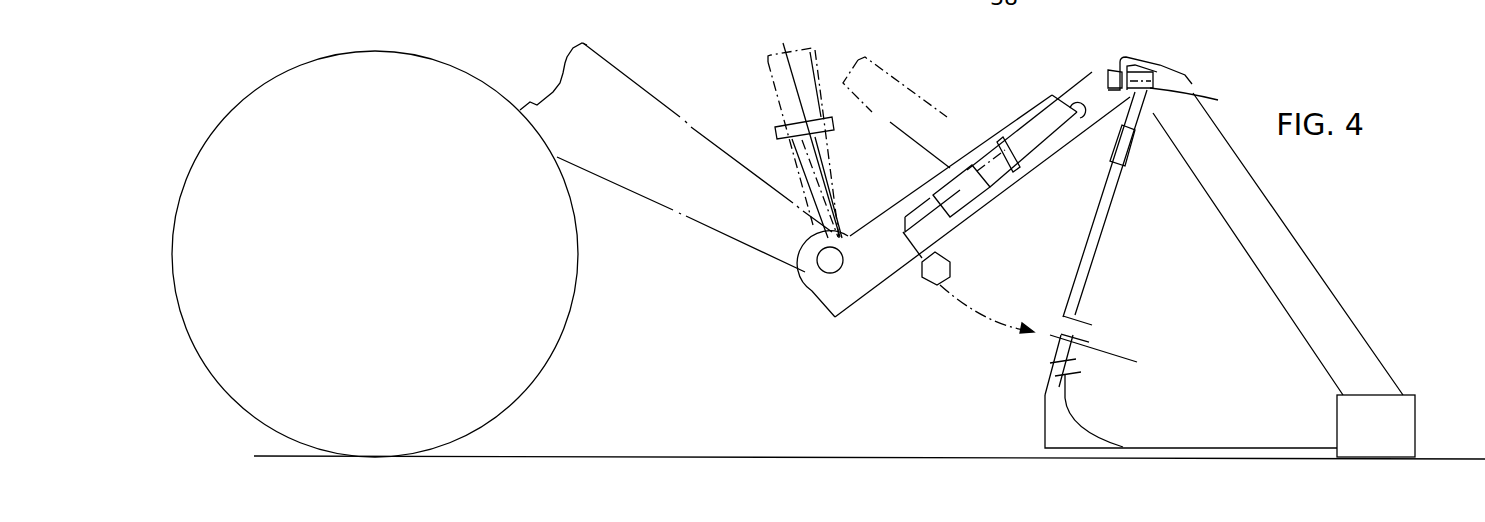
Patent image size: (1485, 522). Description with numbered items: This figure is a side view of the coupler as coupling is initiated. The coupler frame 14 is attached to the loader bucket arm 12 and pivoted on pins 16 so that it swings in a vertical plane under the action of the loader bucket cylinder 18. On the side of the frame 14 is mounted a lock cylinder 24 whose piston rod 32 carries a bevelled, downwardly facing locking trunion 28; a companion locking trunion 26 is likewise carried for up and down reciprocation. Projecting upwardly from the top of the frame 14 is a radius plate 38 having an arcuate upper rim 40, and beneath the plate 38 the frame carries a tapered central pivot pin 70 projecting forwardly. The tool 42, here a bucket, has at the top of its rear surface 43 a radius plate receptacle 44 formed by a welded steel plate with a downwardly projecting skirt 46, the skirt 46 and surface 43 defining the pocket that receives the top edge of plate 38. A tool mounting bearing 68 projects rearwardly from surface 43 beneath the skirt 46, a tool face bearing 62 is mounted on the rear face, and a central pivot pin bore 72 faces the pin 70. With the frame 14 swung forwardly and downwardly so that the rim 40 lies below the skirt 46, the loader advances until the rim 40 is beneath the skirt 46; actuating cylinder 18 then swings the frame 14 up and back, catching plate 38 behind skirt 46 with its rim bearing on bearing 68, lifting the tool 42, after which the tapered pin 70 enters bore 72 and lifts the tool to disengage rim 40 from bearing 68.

The loader bucket arm 12 is at (691, 176).
The coupler frame 14 is at (943, 106).
The pins 16 is at (823, 260).
The loader bucket cylinder 18 is at (785, 87).
The lock cylinder 24 is at (1030, 127).
The locking trunion 26 is at (905, 101).
The locking trunion 28 is at (950, 186).
The piston rod 32 is at (987, 158).
The radius plate 38 is at (884, 283).
The arcuate upper rim 40 is at (1160, 92).
The tool 42 is at (1206, 377).
The rear surface 43 is at (1083, 270).
The radius plate receptacle 44 is at (1118, 57).
The skirt 46 is at (1101, 89).
The tool face bearing 62 is at (1112, 143).
The tool mounting bearing 68 is at (1153, 73).
The central pivot pin 70 is at (934, 263).
The central pivot pin bore 72 is at (1080, 333).